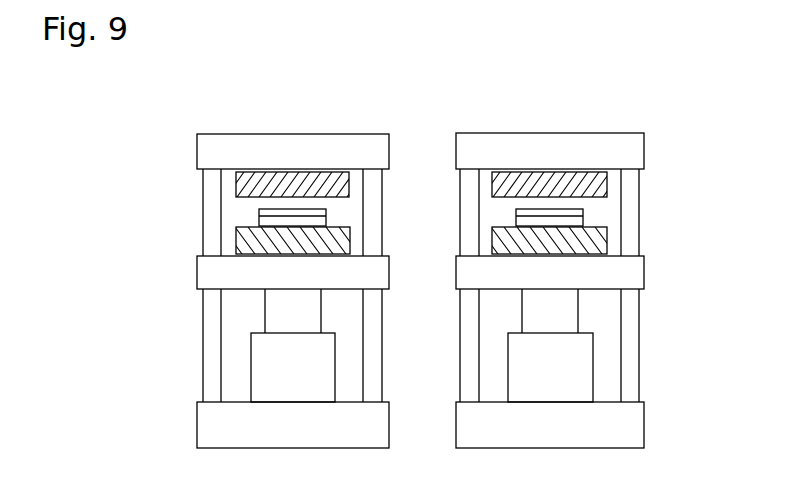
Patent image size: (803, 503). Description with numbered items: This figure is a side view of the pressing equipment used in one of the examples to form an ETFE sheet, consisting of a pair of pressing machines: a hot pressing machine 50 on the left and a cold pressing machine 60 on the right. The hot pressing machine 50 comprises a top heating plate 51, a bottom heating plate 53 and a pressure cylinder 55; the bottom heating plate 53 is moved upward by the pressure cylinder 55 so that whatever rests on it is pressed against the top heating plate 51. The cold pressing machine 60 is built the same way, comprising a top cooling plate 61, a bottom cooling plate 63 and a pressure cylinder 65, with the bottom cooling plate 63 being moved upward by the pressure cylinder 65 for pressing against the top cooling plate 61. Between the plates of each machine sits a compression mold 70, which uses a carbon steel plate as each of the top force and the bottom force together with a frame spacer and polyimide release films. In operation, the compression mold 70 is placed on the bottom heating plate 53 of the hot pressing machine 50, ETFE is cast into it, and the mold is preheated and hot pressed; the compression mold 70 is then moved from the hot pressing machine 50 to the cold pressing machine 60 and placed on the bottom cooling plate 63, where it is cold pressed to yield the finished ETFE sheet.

The hot pressing machine 50 is at (254, 124).
The top heating plate 51 is at (236, 180).
The bottom heating plate 53 is at (236, 238).
The pressure cylinder 55 is at (262, 311).
The cold pressing machine 60 is at (501, 123).
The top cooling plate 61 is at (605, 185).
The bottom cooling plate 63 is at (605, 240).
The pressure cylinder 65 is at (561, 311).
The compression mold 70 is at (259, 212).